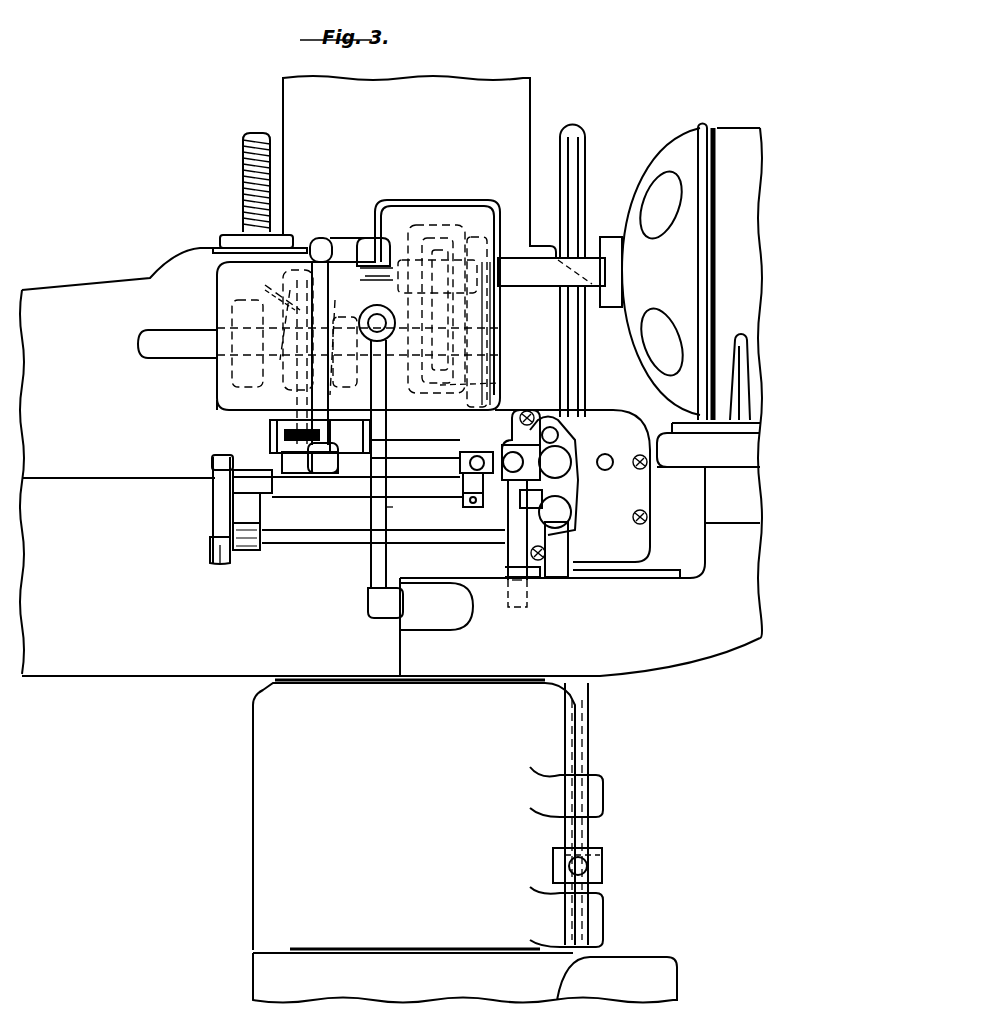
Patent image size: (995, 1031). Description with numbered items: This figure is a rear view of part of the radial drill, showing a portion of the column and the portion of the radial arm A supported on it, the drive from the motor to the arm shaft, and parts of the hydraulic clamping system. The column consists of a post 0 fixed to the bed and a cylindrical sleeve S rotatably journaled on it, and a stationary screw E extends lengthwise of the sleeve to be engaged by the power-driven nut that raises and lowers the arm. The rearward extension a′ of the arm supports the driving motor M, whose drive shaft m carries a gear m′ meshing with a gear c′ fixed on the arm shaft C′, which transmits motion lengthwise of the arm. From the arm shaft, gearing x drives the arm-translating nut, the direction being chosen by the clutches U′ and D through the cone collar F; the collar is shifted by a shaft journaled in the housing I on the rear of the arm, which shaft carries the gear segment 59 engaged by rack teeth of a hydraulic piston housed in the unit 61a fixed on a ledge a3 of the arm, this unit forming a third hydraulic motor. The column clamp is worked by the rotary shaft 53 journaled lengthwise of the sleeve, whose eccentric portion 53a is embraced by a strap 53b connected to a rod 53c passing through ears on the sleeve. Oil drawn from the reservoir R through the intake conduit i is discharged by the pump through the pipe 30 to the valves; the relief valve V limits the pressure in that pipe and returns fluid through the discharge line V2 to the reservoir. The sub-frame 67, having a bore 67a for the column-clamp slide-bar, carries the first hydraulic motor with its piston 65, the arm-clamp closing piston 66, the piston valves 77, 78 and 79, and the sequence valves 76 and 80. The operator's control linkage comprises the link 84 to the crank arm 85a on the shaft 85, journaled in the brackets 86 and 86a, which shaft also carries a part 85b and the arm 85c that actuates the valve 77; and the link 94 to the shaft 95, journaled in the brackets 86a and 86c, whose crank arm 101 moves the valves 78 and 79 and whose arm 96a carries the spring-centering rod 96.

The cylindrical sleeve S is at (462, 85).
The stationary screw E is at (243, 150).
The driving motor M is at (728, 128).
The rotary shaft 53 is at (587, 183).
The eccentric portion 53a is at (600, 855).
The strap 53b is at (553, 865).
The rod 53c is at (587, 870).
The gear m′ is at (445, 250).
The drive shaft m is at (551, 272).
The pipe 30 is at (352, 240).
The gearing x is at (324, 289).
The clutch D is at (248, 300).
The arm shaft C′ is at (190, 360).
The housing I is at (215, 400).
The cone collar F is at (291, 362).
The clutch U′ is at (374, 461).
The gear c′ is at (500, 383).
The relief valve V is at (535, 428).
The discharge line V2 is at (520, 578).
The hydraulic motor unit 61a is at (272, 428).
The ledge a3 is at (282, 462).
The gear segment 59 is at (313, 463).
The crank arm 85a is at (225, 470).
The link 84 is at (213, 512).
The slide block 86 is at (266, 493).
The bracket 86a is at (262, 516).
The bracket 86c is at (560, 550).
The rod 96 is at (260, 538).
The arm 96a is at (240, 537).
The link 94 is at (230, 558).
The shaft 85 is at (347, 486).
The bar end 85b is at (465, 502).
The arm 85c is at (470, 482).
The shaft 95 is at (345, 545).
The intake conduit i is at (395, 505).
The piston valve 77 is at (490, 448).
The piston valve 78 is at (501, 488).
The piston valve 76 is at (554, 434).
The piston 65 is at (571, 455).
The arm clamp closing piston 66 is at (566, 508).
The sub-frame 67 is at (583, 485).
The bore 67a is at (609, 456).
The crank arm 101 is at (535, 505).
The piston valve 79 is at (508, 530).
The piston valve 80 is at (520, 532).
The reservoir R is at (455, 621).
The radial arm A is at (205, 641).
The rearward extension of the arm a′ is at (706, 613).
The post 0 is at (465, 978).